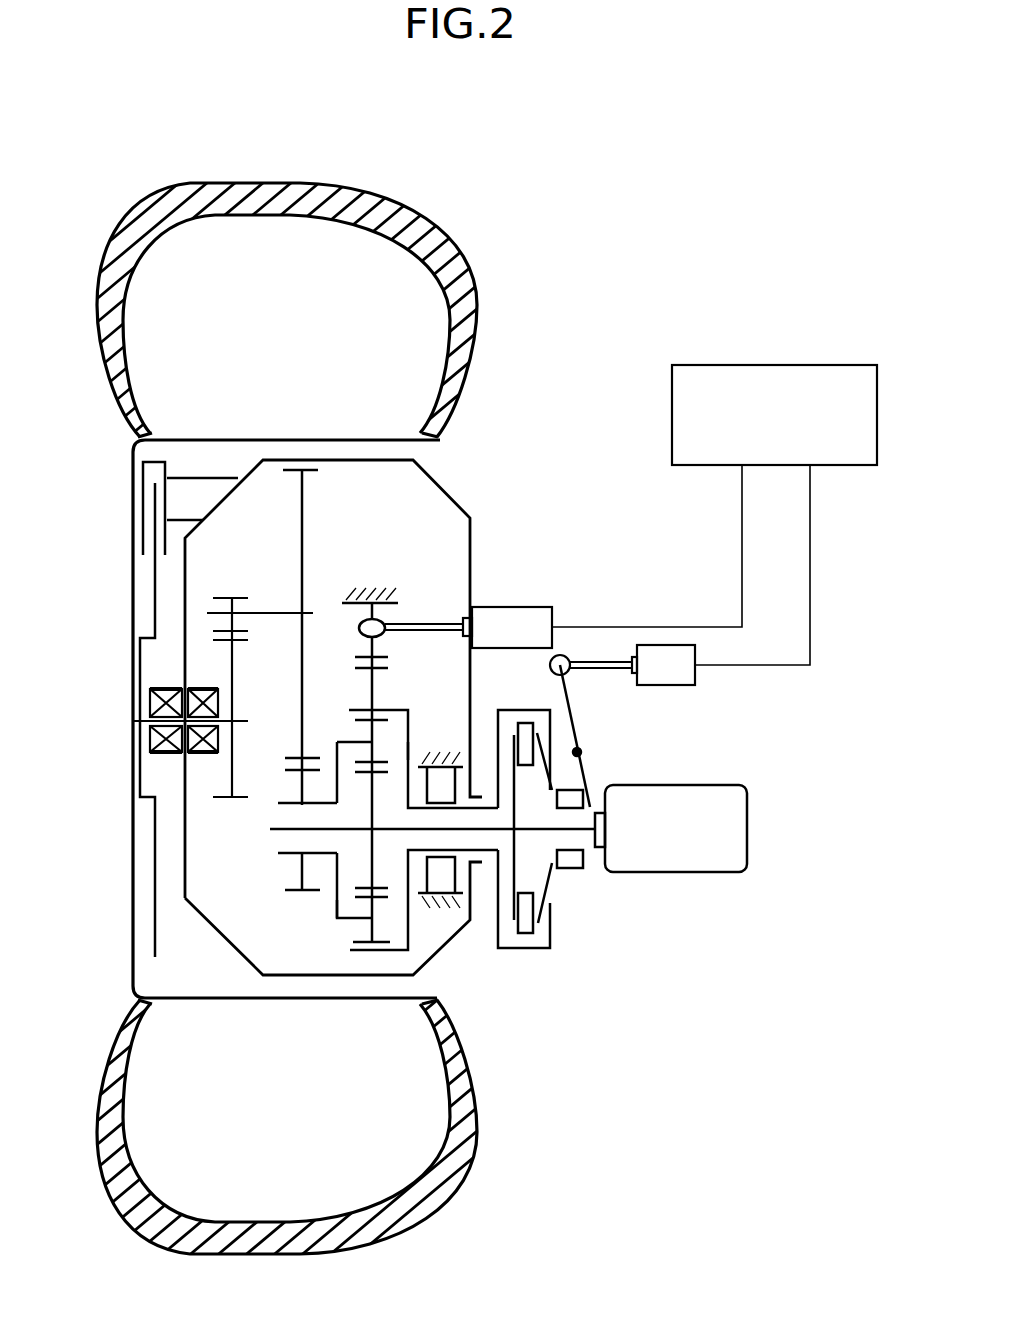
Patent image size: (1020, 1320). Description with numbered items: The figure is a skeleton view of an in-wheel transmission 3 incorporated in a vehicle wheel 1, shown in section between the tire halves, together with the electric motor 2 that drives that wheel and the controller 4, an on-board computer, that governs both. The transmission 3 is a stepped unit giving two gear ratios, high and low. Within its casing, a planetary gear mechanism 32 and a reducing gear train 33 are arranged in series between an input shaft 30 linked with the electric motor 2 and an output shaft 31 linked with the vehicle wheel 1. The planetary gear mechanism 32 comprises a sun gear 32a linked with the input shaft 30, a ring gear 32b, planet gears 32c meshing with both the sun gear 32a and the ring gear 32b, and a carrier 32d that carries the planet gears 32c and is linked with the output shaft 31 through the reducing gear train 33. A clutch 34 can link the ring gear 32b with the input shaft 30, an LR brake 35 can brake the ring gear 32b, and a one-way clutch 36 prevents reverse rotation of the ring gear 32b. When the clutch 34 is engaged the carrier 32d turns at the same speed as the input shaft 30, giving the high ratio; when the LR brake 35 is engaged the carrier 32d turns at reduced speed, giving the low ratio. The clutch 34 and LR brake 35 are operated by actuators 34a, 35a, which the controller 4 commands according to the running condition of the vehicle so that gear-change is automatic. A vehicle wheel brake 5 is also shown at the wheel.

The vehicle wheel 1 is at (492, 310).
The electric motor 2 is at (740, 825).
The in-wheel transmission 3 is at (486, 521).
The controller 4 is at (763, 367).
The vehicle wheel brake 5 is at (140, 513).
The input shaft 30 is at (282, 831).
The output shaft 31 is at (243, 718).
The planetary gear mechanism 32 is at (357, 802).
The sun gear 32a is at (360, 807).
The ring gear 32b is at (410, 743).
The planet gears 32c is at (366, 731).
The carrier 32d is at (335, 905).
The reducing gear train 33 is at (316, 553).
The clutch 34 is at (535, 953).
The actuator 34a is at (660, 682).
The LR brake 35 is at (407, 617).
The actuator 35a is at (515, 606).
The one-way clutch 36 is at (438, 893).